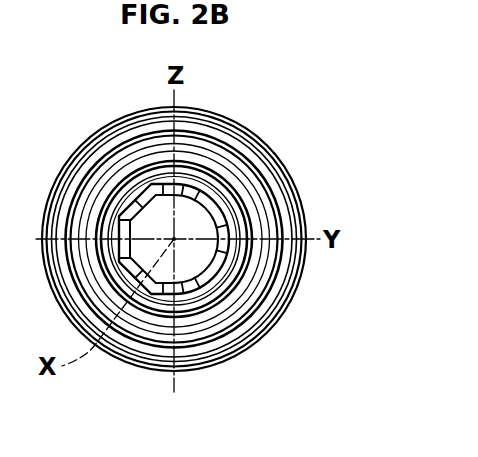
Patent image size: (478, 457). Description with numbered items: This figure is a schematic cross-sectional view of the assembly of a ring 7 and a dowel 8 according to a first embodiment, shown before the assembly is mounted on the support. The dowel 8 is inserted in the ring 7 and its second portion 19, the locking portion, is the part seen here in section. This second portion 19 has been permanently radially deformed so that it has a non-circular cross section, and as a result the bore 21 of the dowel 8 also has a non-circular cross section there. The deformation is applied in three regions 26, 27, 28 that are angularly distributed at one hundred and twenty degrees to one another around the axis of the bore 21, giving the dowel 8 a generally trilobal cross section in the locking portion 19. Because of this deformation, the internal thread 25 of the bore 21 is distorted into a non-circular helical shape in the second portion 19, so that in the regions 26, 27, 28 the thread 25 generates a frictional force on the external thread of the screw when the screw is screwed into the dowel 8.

The ring 7 is at (104, 131).
The dowel 8 is at (234, 290).
The second portion 19 is at (207, 300).
The bore 21 is at (195, 258).
The internal thread 25 is at (215, 207).
The region 26 is at (148, 297).
The region 27 is at (235, 225).
The region 28 is at (137, 190).